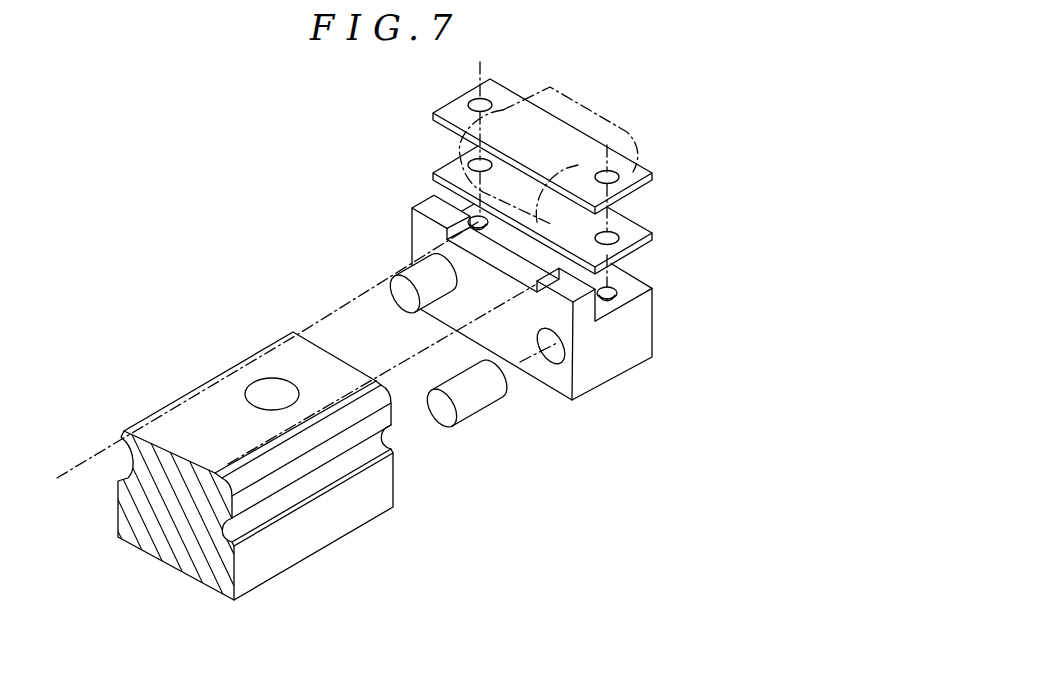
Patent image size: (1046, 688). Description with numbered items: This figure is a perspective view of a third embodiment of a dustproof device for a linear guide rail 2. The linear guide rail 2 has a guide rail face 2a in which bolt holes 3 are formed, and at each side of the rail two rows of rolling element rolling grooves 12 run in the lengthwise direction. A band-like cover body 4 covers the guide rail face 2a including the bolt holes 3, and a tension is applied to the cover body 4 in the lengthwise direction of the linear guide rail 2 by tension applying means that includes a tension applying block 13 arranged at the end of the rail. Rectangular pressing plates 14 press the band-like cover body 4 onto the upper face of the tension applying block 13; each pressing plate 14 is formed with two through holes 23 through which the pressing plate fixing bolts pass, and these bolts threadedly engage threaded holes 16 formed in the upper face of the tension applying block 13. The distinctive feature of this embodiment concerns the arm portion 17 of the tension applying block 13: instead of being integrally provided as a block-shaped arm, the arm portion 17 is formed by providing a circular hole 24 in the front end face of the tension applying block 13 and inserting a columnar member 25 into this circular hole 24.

The linear guide rail 2 is at (315, 532).
The guide rail face 2a is at (203, 420).
The bolt holes 3 is at (268, 380).
The band-like cover body 4 is at (342, 307).
The rolling element rolling grooves 12 is at (393, 395).
The tension applying block 13 is at (620, 352).
The pressing plate 14 is at (633, 156).
The threaded holes 16 is at (608, 290).
The arm portion 17 is at (483, 394).
The through holes 23 is at (633, 210).
The circular hole 24 is at (546, 362).
The columnar member 25 is at (467, 427).